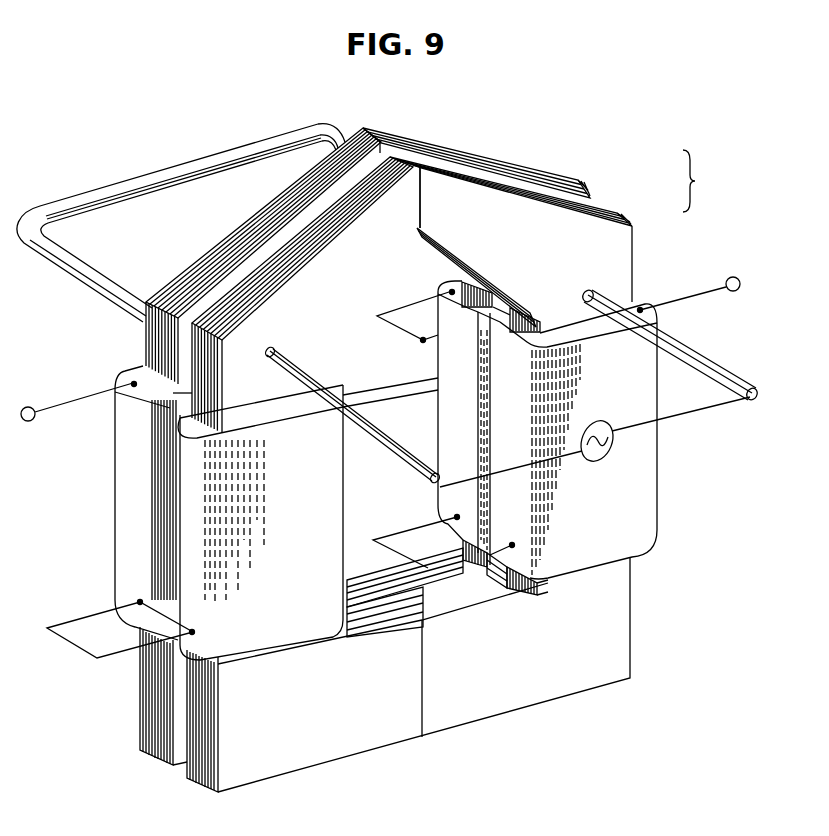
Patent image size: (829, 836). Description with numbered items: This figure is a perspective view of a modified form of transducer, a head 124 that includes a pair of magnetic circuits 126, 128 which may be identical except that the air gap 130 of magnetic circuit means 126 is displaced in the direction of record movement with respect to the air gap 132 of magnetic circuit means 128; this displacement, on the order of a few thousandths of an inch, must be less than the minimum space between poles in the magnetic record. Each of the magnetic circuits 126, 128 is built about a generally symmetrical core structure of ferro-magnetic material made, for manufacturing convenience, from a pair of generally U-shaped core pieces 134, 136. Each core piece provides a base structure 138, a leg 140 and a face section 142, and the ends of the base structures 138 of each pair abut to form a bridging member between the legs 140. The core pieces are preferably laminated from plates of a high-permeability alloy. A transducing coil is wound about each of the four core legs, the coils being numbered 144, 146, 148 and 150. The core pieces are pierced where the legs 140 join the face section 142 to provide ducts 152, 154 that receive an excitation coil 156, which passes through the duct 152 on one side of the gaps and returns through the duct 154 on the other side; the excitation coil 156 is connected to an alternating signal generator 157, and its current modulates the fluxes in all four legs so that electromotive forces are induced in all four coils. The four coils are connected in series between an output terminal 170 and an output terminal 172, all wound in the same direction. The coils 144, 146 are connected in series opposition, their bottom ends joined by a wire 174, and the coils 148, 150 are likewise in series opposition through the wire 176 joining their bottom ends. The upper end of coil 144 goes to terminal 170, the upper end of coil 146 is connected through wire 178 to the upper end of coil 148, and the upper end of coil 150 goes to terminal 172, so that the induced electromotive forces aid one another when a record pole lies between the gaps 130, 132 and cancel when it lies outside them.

The head 124 is at (62, 330).
The magnetic circuit 126 is at (626, 210).
The magnetic circuit 128 is at (595, 183).
The air gap 130 is at (422, 198).
The air gap 132 is at (360, 128).
The core piece 134 is at (336, 709).
The core piece 136 is at (533, 659).
The base structure 138 is at (478, 714).
The leg 140 is at (230, 723).
The face section 142 is at (262, 278).
The transducing coil 144 is at (123, 535).
The transducing coil 146 is at (338, 527).
The transducing coil 148 is at (446, 415).
The transducing coil 150 is at (648, 500).
The duct 152 is at (276, 348).
The duct 154 is at (596, 298).
The excitation coil 156 is at (233, 153).
The alternating signal generator 157 is at (620, 425).
The output terminal 170 is at (32, 421).
The output terminal 172 is at (735, 277).
The wire 174 is at (85, 648).
The wire 176 is at (395, 561).
The wire 178 is at (423, 341).